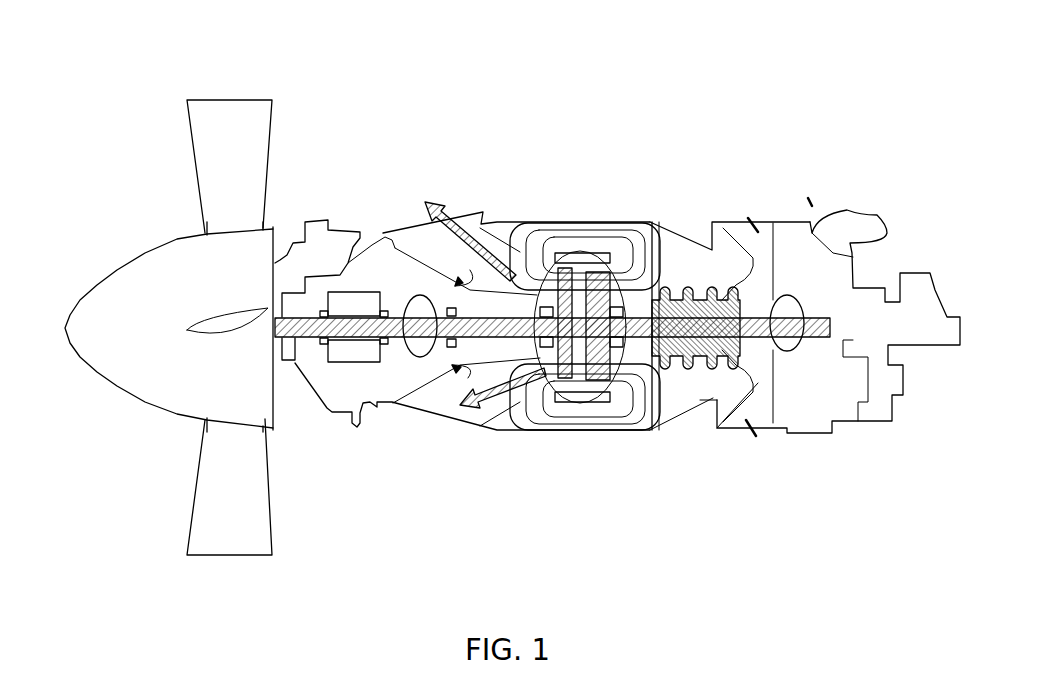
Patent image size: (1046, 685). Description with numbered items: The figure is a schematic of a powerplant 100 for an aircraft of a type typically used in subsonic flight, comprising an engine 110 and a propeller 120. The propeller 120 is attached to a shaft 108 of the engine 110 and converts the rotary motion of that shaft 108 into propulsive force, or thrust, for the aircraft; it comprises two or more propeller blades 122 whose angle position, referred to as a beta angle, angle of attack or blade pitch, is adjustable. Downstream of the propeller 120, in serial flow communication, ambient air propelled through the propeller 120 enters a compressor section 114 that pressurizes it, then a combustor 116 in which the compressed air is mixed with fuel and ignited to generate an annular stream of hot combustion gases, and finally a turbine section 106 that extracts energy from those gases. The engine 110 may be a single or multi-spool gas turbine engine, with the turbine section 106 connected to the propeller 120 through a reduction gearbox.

The powerplant 100 is at (706, 58).
The propeller 120 is at (272, 92).
The propeller blades 122 is at (255, 135).
The engine 110 is at (908, 194).
The shaft 108 is at (295, 363).
The turbine section 106 is at (533, 345).
The combustor 116 is at (597, 245).
The compressor section 114 is at (683, 372).